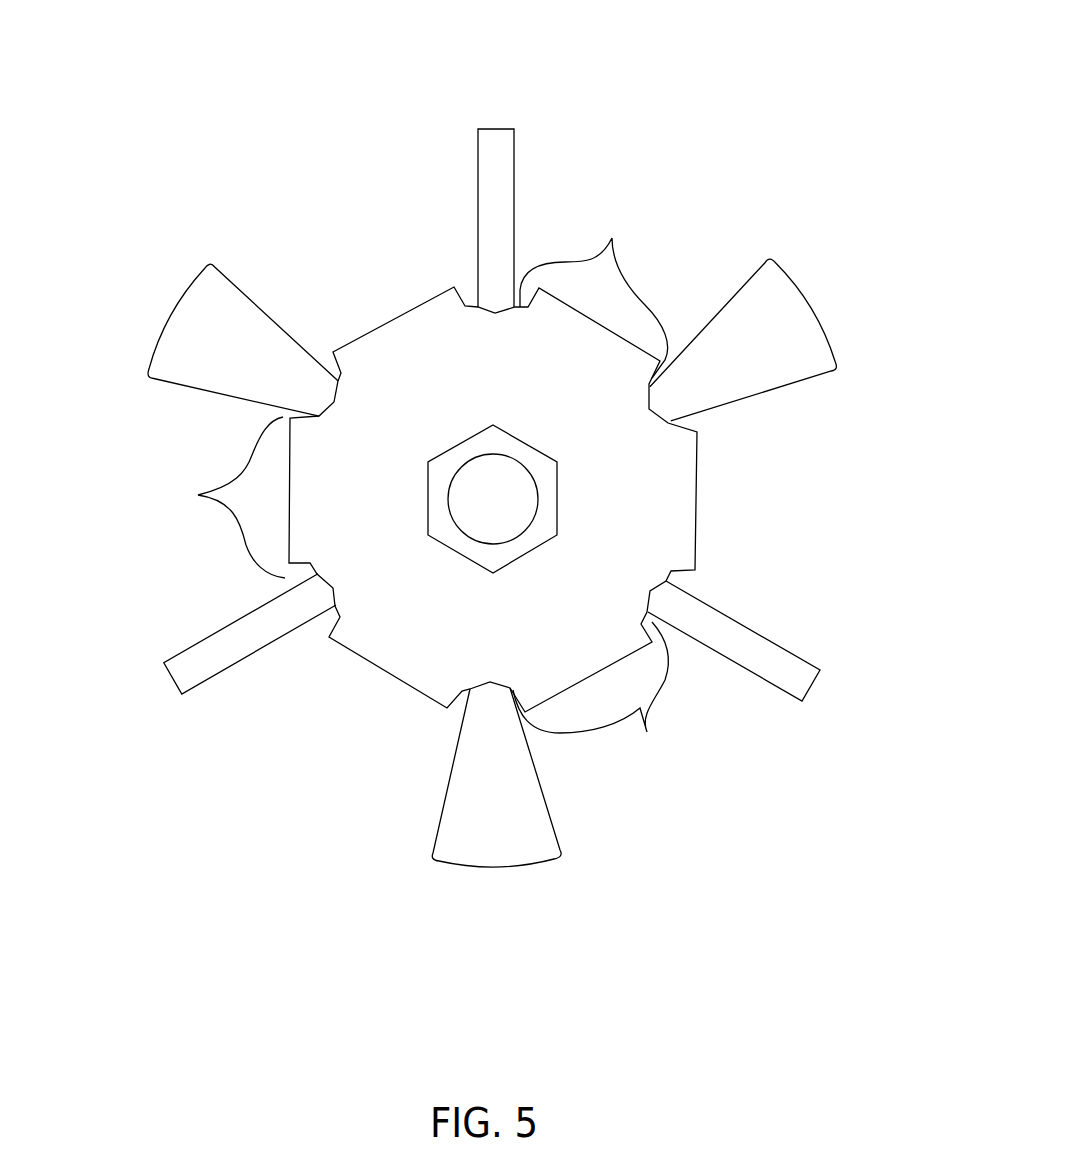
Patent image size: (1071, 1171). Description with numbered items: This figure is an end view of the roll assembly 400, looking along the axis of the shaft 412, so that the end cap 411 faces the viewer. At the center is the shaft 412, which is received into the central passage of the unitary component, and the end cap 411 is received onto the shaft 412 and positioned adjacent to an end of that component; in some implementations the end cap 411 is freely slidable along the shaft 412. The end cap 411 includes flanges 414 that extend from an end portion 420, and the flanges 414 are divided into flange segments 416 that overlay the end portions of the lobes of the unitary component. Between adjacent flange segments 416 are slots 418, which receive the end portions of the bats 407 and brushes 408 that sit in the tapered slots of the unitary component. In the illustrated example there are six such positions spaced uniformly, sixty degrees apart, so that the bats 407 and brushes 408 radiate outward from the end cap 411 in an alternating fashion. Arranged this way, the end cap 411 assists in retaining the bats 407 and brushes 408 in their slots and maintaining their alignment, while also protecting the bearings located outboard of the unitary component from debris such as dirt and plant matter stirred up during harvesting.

The roll assembly 400 is at (753, 80).
The bats 407 is at (513, 128).
The brushes 408 is at (810, 306).
The end caps 411 is at (443, 559).
The shaft 412 is at (457, 550).
The flanges 414 is at (493, 455).
The flange segments 416 is at (390, 317).
The slots 418 is at (408, 487).
The end portion 420 is at (493, 499).